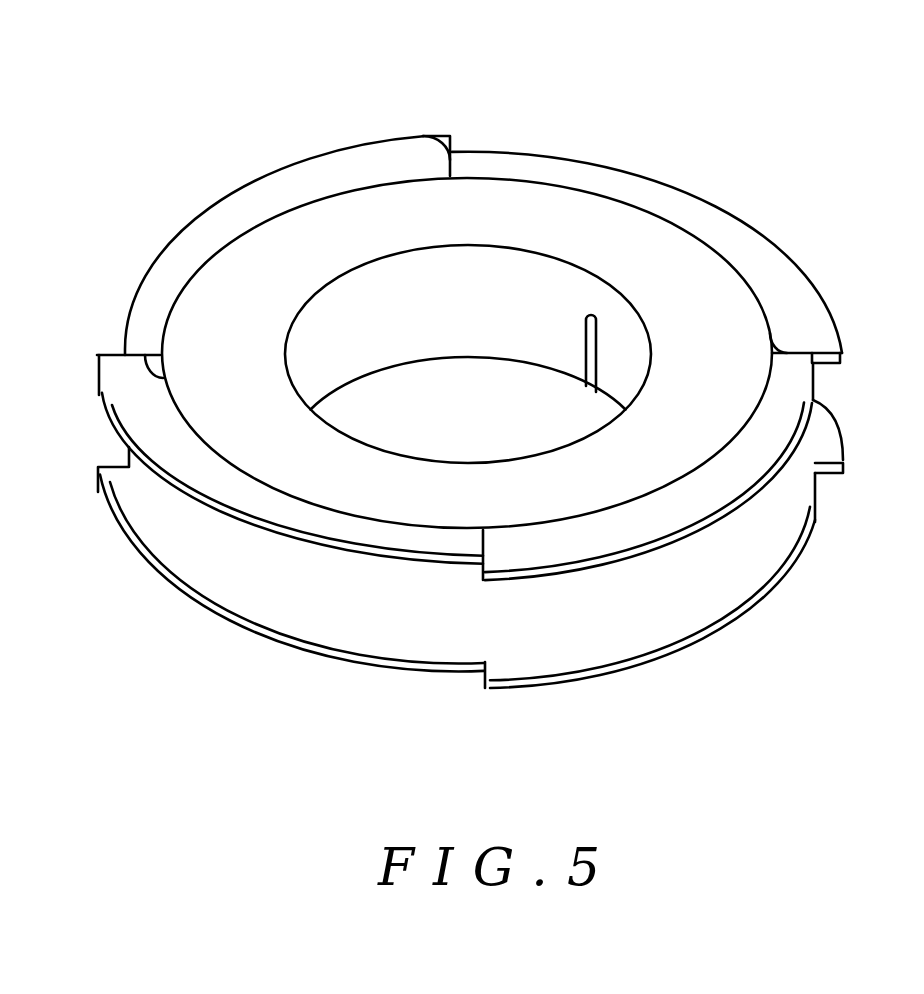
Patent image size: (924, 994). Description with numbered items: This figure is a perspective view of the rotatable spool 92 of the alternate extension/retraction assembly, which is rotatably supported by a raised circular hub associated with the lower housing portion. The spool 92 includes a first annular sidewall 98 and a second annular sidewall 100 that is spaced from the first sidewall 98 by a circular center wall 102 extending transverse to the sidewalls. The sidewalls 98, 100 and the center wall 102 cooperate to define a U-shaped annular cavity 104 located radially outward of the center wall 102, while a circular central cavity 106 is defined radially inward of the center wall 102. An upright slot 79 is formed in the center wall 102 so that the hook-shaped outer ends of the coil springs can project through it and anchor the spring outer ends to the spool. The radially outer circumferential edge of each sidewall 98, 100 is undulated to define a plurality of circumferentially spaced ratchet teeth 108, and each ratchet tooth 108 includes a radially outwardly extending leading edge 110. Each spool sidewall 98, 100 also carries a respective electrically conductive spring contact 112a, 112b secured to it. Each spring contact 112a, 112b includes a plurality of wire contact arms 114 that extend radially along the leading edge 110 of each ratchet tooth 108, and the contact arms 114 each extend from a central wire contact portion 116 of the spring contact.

The rotatable spool 92 is at (620, 138).
The first annular sidewall 98 is at (255, 185).
The second annular sidewall 100 is at (710, 603).
The circular center wall 102 is at (352, 283).
The U-shaped annular cavity 104 is at (425, 624).
The circular central cavity 106 is at (485, 297).
The ratchet teeth 108 is at (363, 153).
The leading edge 110 is at (112, 353).
The spring contact 112a is at (493, 143).
The spring contact 112b is at (183, 592).
The wire contact arms 114 is at (423, 137).
The central wire contact portion 116 is at (653, 497).
The upright slot 79 is at (588, 338).